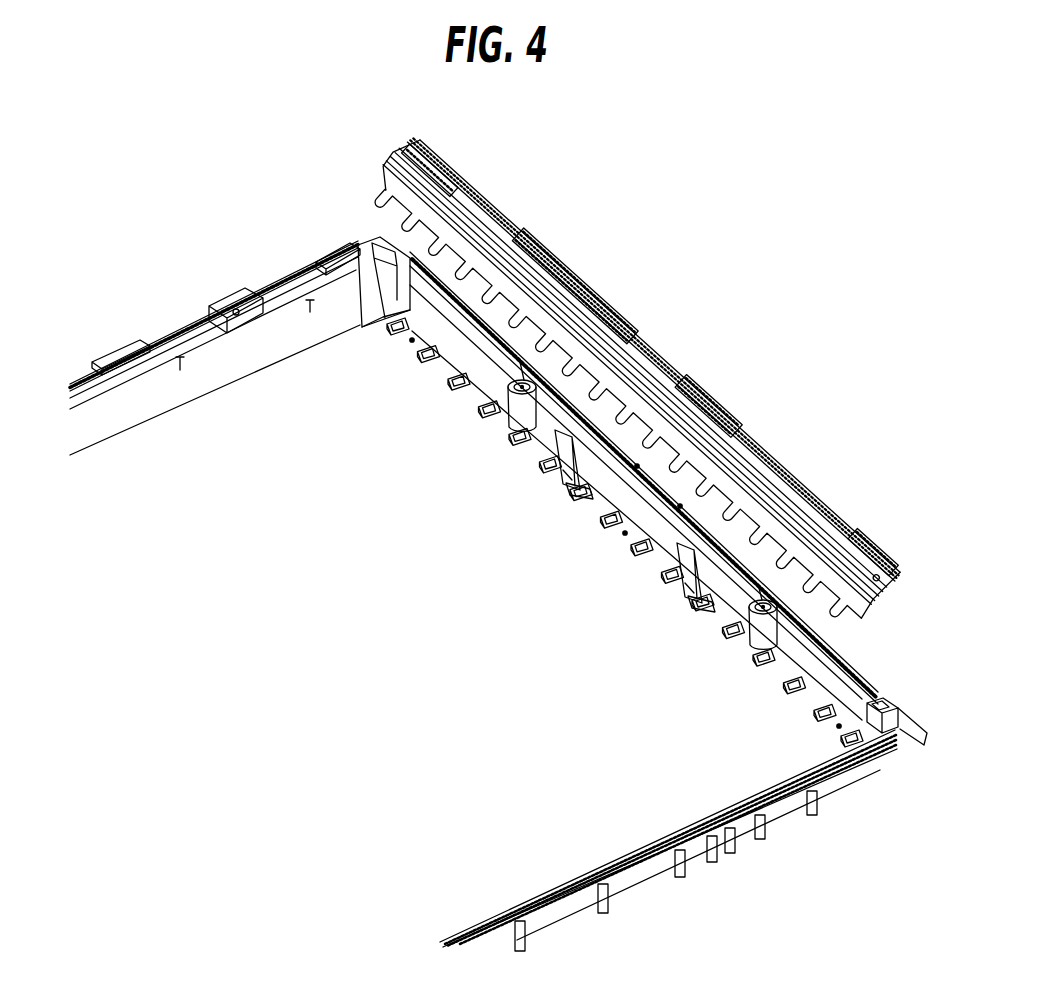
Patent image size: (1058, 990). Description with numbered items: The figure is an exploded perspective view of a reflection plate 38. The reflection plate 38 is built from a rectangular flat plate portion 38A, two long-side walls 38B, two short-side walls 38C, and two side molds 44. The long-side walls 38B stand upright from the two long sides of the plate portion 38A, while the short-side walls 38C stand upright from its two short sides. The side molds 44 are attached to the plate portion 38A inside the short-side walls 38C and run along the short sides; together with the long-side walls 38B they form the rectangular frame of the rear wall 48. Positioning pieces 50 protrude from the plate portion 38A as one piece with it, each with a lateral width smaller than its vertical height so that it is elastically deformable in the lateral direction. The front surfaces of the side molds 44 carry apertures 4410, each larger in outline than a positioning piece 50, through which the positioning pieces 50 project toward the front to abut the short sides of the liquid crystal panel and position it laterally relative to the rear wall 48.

The reflection plate 38 is at (495, 570).
The plate portion 38A is at (388, 694).
The long-side wall 38B is at (122, 415).
The short-side wall 38C is at (853, 697).
The side mold 44 is at (631, 380).
The aperture 4410 is at (600, 300).
The rear wall 48 is at (631, 380).
The positioning piece 50 is at (683, 563).